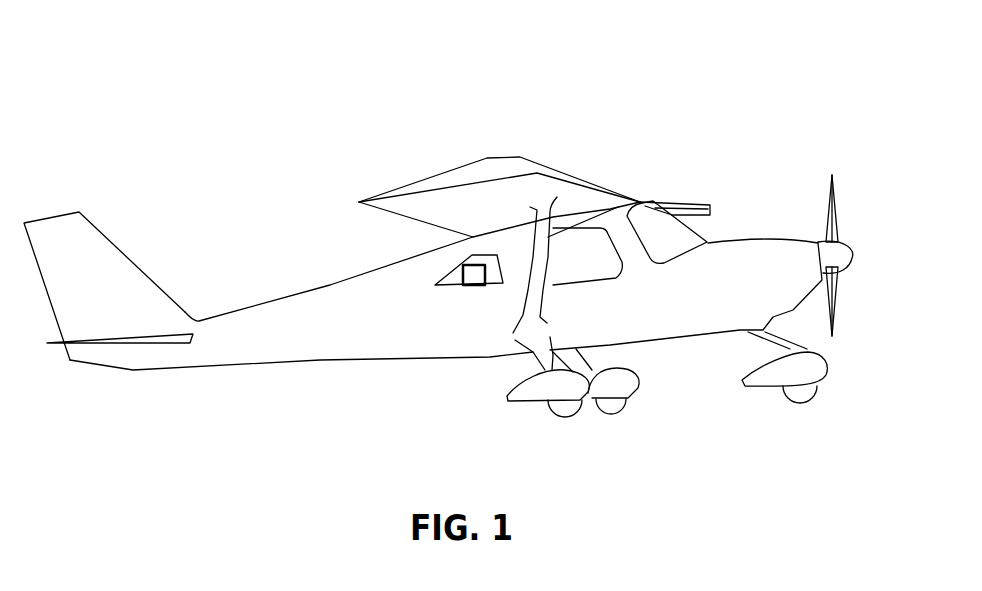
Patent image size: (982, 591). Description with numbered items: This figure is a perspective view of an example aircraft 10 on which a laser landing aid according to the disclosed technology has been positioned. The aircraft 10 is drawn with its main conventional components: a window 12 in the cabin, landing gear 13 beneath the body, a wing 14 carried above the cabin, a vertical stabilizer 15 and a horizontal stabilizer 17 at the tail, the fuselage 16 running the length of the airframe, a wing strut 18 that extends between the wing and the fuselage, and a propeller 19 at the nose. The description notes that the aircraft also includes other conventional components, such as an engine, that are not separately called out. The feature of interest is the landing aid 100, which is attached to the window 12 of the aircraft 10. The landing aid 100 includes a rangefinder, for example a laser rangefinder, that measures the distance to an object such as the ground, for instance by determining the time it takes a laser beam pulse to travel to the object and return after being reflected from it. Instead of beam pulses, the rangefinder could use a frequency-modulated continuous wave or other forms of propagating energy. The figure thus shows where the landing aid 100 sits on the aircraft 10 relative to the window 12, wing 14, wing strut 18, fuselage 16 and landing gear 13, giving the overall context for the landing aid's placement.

The aircraft 10 is at (540, 79).
The window 12 is at (488, 287).
The landing gear 13 is at (562, 410).
The wing 14 is at (460, 210).
The vertical stabilizer 15 is at (88, 252).
The fuselage 16 is at (387, 333).
The horizontal stabilizer 17 is at (142, 342).
The wing strut 18 is at (578, 243).
The propeller 19 is at (823, 217).
The landing aid 100 is at (440, 263).